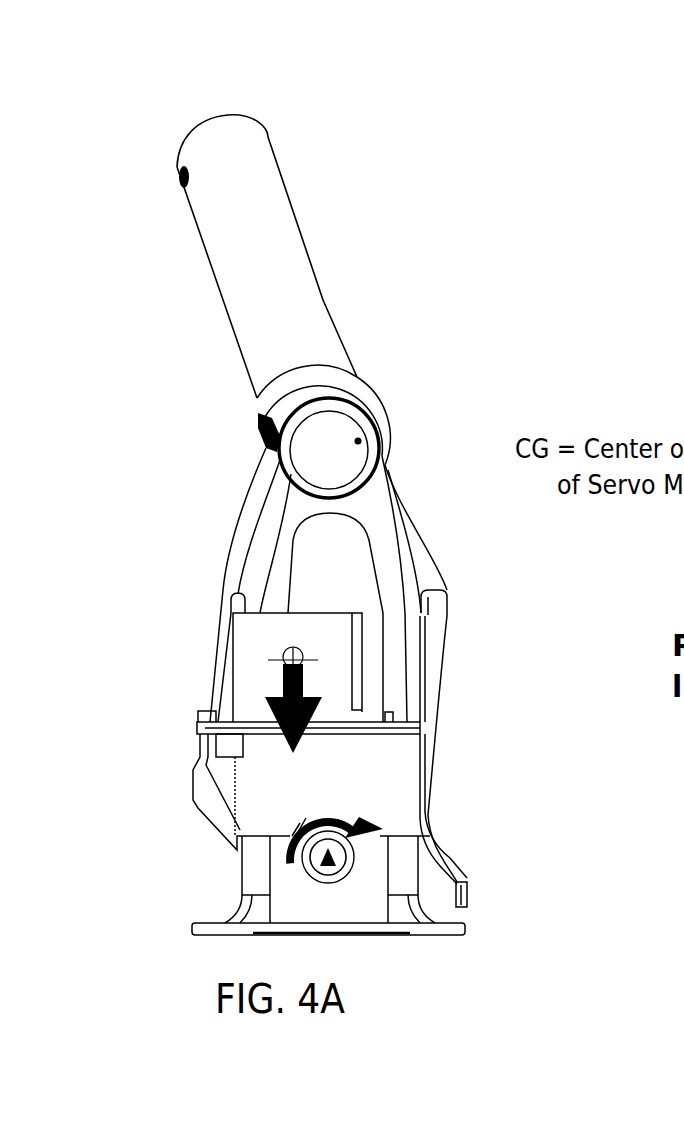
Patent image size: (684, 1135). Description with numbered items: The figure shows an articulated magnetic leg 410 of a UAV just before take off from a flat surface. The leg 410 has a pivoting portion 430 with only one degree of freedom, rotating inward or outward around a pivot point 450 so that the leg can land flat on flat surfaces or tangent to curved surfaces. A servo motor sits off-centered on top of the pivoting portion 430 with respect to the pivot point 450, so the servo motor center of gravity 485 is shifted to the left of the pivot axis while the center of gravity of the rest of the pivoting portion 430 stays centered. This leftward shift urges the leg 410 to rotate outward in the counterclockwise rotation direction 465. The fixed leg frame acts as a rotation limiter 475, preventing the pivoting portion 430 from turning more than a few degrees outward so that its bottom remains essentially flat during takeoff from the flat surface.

The articulated magnetic leg 410 is at (683, 232).
The pivoting portion 430 is at (503, 870).
The pivot point 450 is at (328, 857).
The rotation direction 465 is at (292, 817).
The rotation limiter 475 is at (467, 907).
The servo motor center of gravity 485 is at (282, 686).